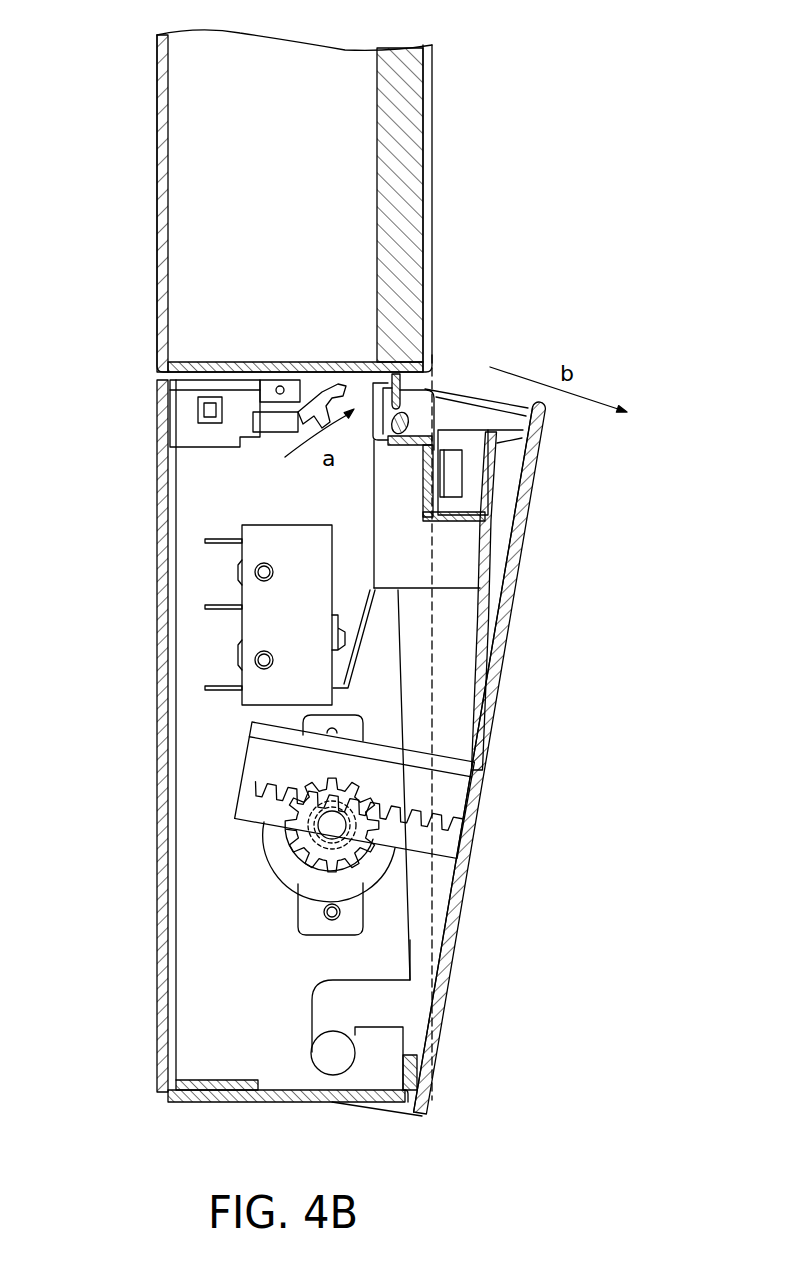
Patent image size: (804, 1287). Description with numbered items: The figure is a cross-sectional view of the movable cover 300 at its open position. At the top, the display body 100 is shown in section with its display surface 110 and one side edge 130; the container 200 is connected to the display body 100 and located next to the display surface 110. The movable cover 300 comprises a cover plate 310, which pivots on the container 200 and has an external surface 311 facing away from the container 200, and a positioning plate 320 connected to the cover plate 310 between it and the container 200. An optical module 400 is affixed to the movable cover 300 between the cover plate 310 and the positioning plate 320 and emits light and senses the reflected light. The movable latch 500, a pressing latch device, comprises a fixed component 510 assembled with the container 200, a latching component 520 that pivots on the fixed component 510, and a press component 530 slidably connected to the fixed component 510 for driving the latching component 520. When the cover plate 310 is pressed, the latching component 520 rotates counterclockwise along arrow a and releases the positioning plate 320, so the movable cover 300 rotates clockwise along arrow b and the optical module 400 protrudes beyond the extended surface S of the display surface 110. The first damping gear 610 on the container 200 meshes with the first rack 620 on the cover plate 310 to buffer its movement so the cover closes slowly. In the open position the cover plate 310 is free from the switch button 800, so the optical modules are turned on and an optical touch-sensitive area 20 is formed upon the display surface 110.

The optical touch-sensitive area 20 is at (476, 100).
The display body 100 is at (140, 183).
The display surface 110 is at (440, 173).
The side edge 130 is at (442, 369).
The container 200 is at (158, 1013).
The movable cover 300 is at (598, 495).
The cover plate 310 is at (516, 568).
The external surface 311 is at (518, 613).
The positioning plate 320 is at (435, 486).
The optical module 400 is at (468, 415).
The movable latch 500 is at (90, 332).
The fixed component 510 is at (185, 411).
The latching component 520 is at (317, 384).
The press component 530 is at (277, 423).
The first damping gear 610 is at (352, 866).
The first rack 620 is at (456, 790).
The switch button 800 is at (270, 630).
The extended surface S is at (433, 668).